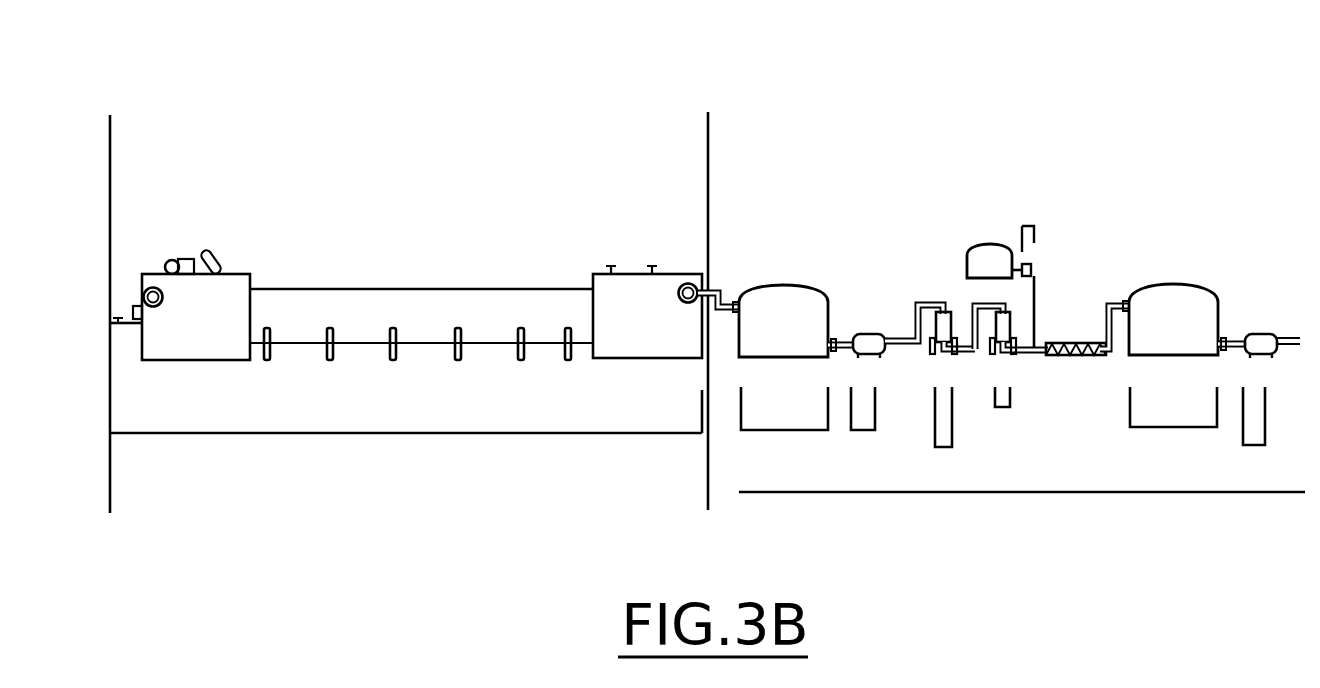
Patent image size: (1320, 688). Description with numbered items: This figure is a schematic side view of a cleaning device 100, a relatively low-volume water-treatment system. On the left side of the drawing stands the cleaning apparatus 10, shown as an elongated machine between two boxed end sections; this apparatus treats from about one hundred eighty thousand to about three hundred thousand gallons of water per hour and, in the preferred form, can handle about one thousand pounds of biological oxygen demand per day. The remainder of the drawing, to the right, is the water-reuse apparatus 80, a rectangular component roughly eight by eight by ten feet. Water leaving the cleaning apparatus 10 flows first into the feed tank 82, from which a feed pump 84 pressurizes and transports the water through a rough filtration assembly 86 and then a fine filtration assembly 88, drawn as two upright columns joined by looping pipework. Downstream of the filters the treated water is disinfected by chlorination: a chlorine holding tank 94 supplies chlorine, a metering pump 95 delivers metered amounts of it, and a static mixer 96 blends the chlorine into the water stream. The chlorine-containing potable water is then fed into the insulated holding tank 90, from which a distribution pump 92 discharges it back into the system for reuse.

The cleaning device 100 is at (518, 96).
The cleaning apparatus 10 is at (703, 146).
The water-reuse apparatus 80 is at (1050, 492).
The feed tank 82 is at (752, 428).
The feed pump 84 is at (862, 400).
The rough filtration assembly 86 is at (944, 398).
The fine filtration assembly 88 is at (1000, 398).
The insulated holding tank 90 is at (1135, 403).
The distribution pump 92 is at (1250, 412).
The chlorine holding tank 94 is at (965, 252).
The metering pump 95 is at (1026, 268).
The static mixer 96 is at (1050, 342).